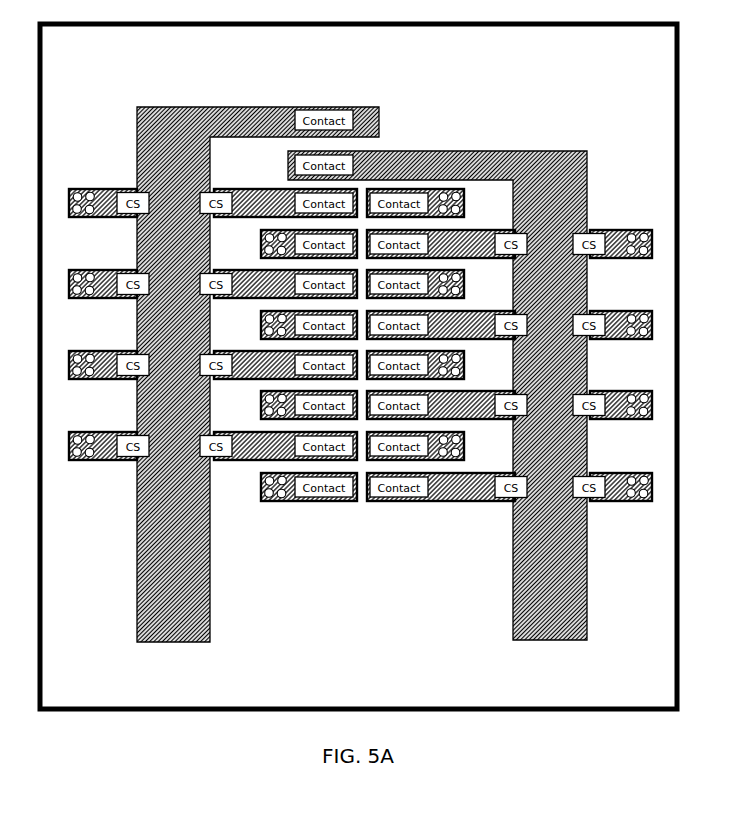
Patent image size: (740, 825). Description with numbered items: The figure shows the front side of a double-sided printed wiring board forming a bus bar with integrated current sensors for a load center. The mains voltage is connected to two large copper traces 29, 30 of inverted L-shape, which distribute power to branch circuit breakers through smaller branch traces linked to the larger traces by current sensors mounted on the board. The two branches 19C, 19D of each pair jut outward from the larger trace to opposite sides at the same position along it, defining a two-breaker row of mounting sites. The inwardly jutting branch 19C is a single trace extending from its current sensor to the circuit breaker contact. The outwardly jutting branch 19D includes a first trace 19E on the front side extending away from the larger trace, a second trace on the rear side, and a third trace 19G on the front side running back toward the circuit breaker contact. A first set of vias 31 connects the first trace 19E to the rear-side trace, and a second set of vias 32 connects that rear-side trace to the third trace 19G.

The large copper trace 29 is at (158, 113).
The large copper trace 30 is at (498, 160).
The first set of vias 31 is at (88, 199).
The second set of vias 32 is at (463, 216).
The branch 19C is at (449, 513).
The branch 19D is at (622, 512).
The first trace 19E is at (608, 477).
The third trace 19G is at (293, 503).